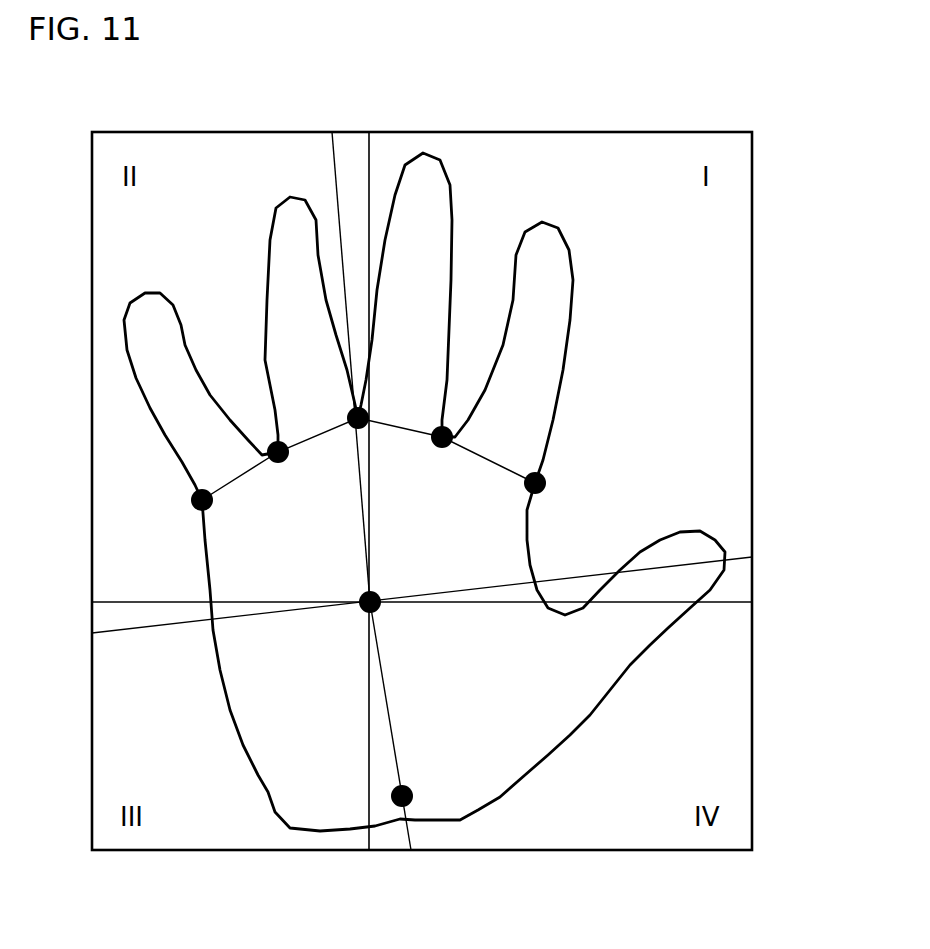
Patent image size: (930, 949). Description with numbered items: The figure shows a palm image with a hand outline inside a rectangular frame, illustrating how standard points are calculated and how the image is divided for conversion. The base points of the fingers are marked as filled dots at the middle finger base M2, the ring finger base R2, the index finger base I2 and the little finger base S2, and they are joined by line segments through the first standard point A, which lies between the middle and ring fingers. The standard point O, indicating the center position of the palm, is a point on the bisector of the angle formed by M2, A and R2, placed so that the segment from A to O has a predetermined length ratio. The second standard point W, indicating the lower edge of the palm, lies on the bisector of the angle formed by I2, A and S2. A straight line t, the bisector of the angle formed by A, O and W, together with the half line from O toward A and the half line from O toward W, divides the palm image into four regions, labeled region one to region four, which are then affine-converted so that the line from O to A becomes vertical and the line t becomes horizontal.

The first standard point A is at (358, 403).
The base point of middle finger M2 is at (428, 429).
The base point of ring finger R2 is at (286, 468).
The base point of little finger S2 is at (186, 507).
The base point of index finger I2 is at (547, 488).
The standard point O is at (361, 614).
The second standard point W is at (411, 797).
The straight line t is at (422, 611).